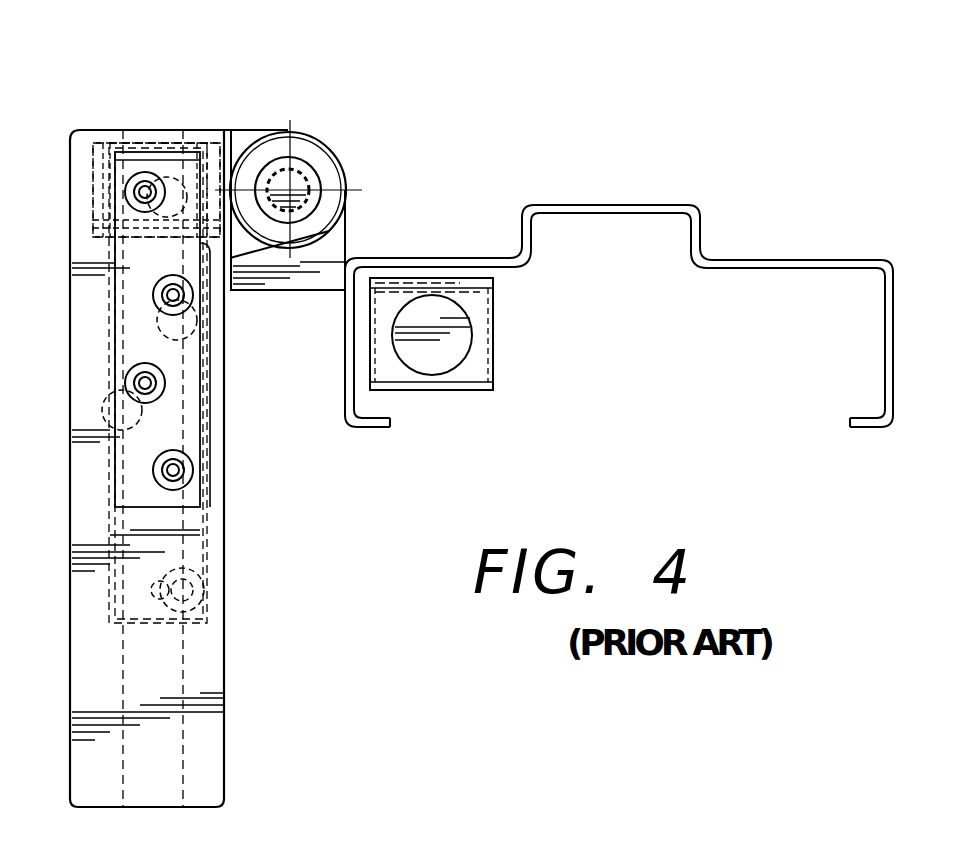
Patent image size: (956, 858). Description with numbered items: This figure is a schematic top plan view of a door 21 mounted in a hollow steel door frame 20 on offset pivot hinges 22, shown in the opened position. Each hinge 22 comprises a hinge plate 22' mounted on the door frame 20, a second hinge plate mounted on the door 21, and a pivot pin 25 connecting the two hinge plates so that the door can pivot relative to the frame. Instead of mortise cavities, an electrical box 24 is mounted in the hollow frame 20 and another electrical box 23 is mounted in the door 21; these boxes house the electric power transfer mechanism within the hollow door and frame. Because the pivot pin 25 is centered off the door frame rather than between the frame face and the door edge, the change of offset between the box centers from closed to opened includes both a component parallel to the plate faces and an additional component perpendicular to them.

The hollow steel frame 20 is at (695, 205).
The door 21 is at (228, 675).
The offset pivot hinge 22 is at (327, 174).
The hinge plate 22' is at (338, 235).
The electrical box 23 is at (95, 192).
The electrical box 24 is at (477, 392).
The pivot pin 25 is at (293, 185).